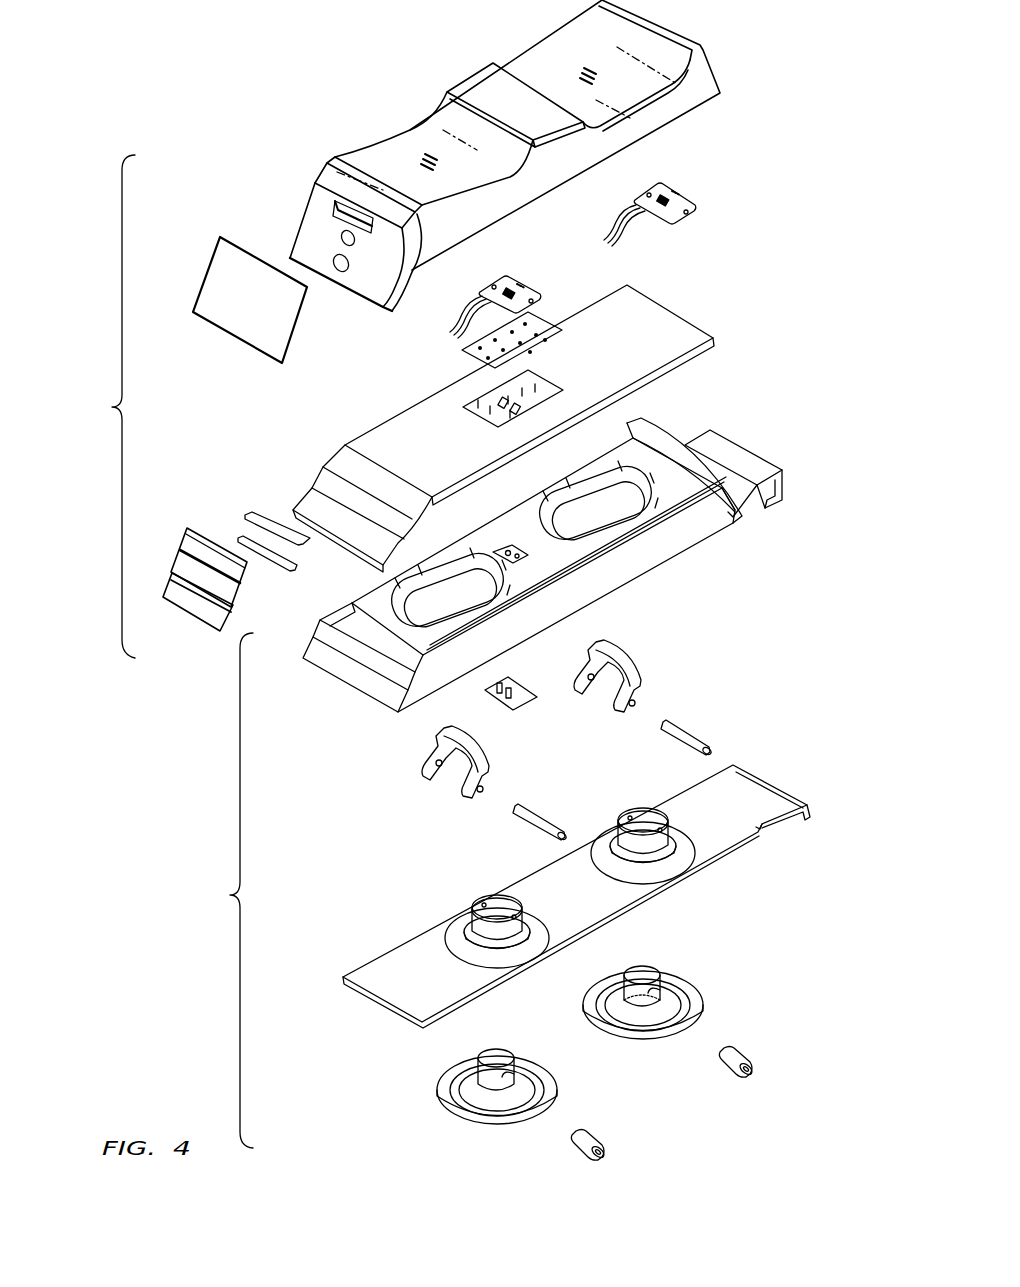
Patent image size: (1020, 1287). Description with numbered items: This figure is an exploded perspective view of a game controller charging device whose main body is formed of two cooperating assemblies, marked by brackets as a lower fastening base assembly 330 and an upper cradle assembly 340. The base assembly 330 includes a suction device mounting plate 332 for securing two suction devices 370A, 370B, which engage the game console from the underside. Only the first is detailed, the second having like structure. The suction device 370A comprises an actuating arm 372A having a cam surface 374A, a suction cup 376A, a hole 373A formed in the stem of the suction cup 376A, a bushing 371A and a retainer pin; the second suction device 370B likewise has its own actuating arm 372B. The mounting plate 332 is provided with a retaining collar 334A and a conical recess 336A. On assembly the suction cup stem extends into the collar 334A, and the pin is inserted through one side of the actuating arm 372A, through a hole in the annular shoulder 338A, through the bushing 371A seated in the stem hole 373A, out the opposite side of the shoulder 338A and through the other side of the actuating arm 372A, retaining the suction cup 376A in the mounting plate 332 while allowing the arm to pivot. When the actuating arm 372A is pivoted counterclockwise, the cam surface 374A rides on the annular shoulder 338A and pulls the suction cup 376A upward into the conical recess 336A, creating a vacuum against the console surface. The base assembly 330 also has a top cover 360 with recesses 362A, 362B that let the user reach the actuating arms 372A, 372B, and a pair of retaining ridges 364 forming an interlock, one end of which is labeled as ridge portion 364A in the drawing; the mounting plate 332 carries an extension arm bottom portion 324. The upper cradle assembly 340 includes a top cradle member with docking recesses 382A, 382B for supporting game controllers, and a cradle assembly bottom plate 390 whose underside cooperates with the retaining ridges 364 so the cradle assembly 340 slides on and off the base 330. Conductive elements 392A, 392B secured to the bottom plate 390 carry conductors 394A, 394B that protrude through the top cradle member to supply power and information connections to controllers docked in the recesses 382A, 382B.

The docking recess 382A is at (555, 60).
The docking recess 382B is at (403, 140).
The conductor 394A is at (662, 197).
The conductive element 392A is at (640, 228).
The conductor 394B is at (505, 283).
The conductive element 392B is at (470, 310).
The cradle assembly bottom plate 390 is at (395, 425).
The suction device mounting plate 332 is at (740, 455).
The upper cradle assembly 340 is at (105, 406).
The recess 362B is at (428, 606).
The recess 362A is at (612, 515).
The housing end portion 364A is at (352, 600).
The retaining ridges 364 is at (590, 560).
The top cover 360 is at (355, 682).
The actuating arm 372A is at (640, 665).
The cam surface 374A is at (638, 705).
The suction device 370A is at (700, 740).
The actuating arm 372B is at (435, 735).
The suction device 370B is at (430, 796).
The retaining collar 334A is at (607, 832).
The extension arm bottom portion 324 is at (786, 818).
The annular shoulder 338A is at (680, 845).
The conical recess 336A is at (650, 872).
The hole 373A is at (652, 993).
The suction cup 376A is at (700, 1028).
The bushing 371A is at (730, 1068).
The base assembly 330 is at (223, 890).